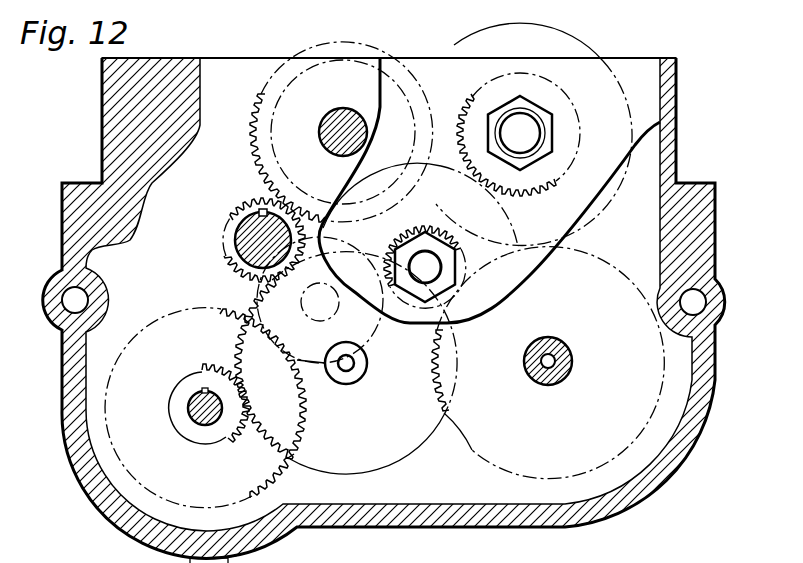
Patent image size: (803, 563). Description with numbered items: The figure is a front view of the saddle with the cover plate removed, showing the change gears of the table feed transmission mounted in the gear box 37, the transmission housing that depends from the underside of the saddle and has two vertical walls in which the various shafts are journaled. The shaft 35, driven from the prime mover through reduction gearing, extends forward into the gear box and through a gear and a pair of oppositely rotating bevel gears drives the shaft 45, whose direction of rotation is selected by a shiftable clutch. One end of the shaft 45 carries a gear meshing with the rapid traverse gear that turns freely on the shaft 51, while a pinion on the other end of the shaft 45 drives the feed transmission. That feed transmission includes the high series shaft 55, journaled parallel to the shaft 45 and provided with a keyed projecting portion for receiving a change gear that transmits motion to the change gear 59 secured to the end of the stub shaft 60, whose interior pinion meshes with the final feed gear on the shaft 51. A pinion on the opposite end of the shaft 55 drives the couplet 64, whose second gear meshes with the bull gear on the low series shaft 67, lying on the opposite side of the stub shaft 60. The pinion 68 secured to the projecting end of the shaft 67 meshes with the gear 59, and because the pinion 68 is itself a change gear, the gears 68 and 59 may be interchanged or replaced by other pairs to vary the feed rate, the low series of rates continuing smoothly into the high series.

The shaft 35 is at (188, 408).
The gear box 37 is at (671, 472).
The shaft 45 is at (367, 363).
The shaft 51 is at (573, 358).
The high series shaft 55 is at (245, 228).
The change gear 59 is at (517, 232).
The stub shaft 60 is at (410, 258).
The couplet 64 is at (262, 73).
The low series shaft 67 is at (527, 120).
The pinion 68 is at (557, 185).